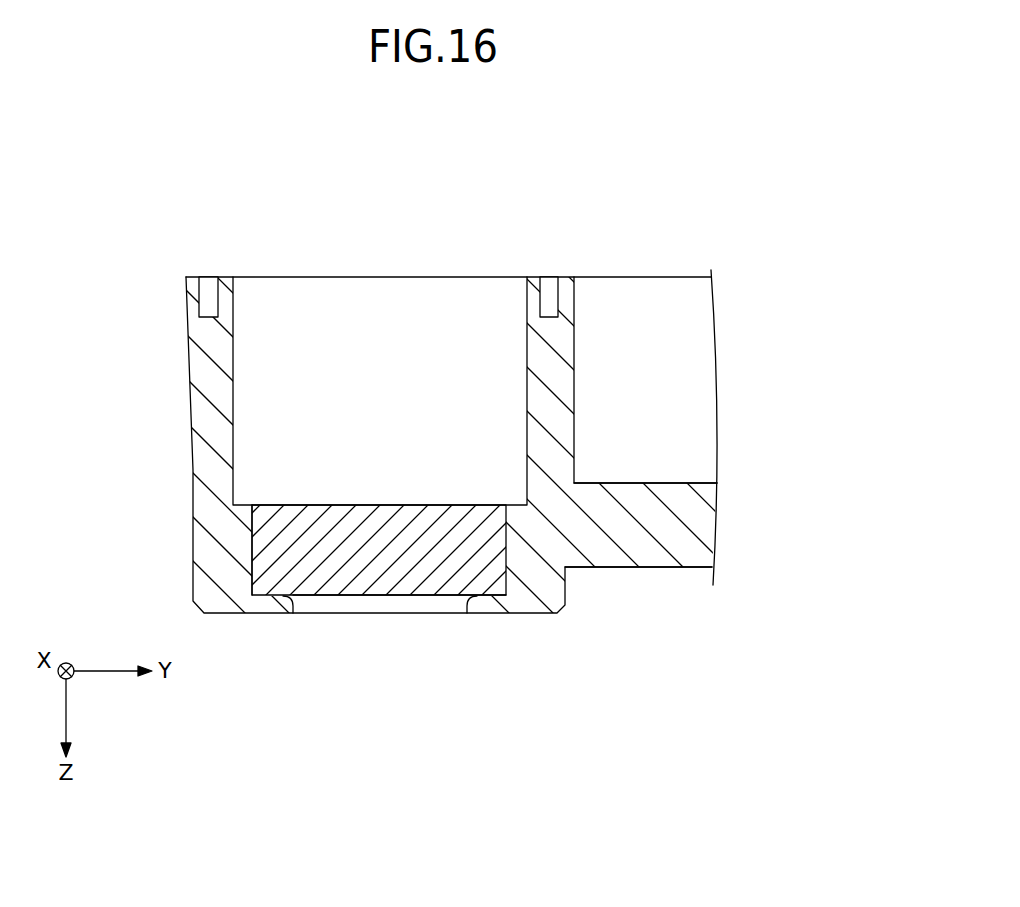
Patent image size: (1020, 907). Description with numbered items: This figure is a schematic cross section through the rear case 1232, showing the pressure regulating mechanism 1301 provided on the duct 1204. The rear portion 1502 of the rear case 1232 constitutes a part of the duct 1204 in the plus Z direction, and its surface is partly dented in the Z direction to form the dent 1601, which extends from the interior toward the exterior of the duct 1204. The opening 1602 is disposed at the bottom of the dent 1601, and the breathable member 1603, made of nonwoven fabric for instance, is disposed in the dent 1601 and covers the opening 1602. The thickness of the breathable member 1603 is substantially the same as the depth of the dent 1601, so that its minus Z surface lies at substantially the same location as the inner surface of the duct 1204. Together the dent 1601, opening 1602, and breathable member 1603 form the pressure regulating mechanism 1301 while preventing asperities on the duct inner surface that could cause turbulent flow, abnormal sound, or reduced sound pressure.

The duct 1204 is at (510, 411).
The rear portion 1502 is at (527, 330).
The rear case 1232 is at (700, 528).
The pressure regulating mechanism 1301 is at (383, 628).
The dent 1601 is at (252, 548).
The opening 1602 is at (383, 605).
The breathable member 1603 is at (275, 711).